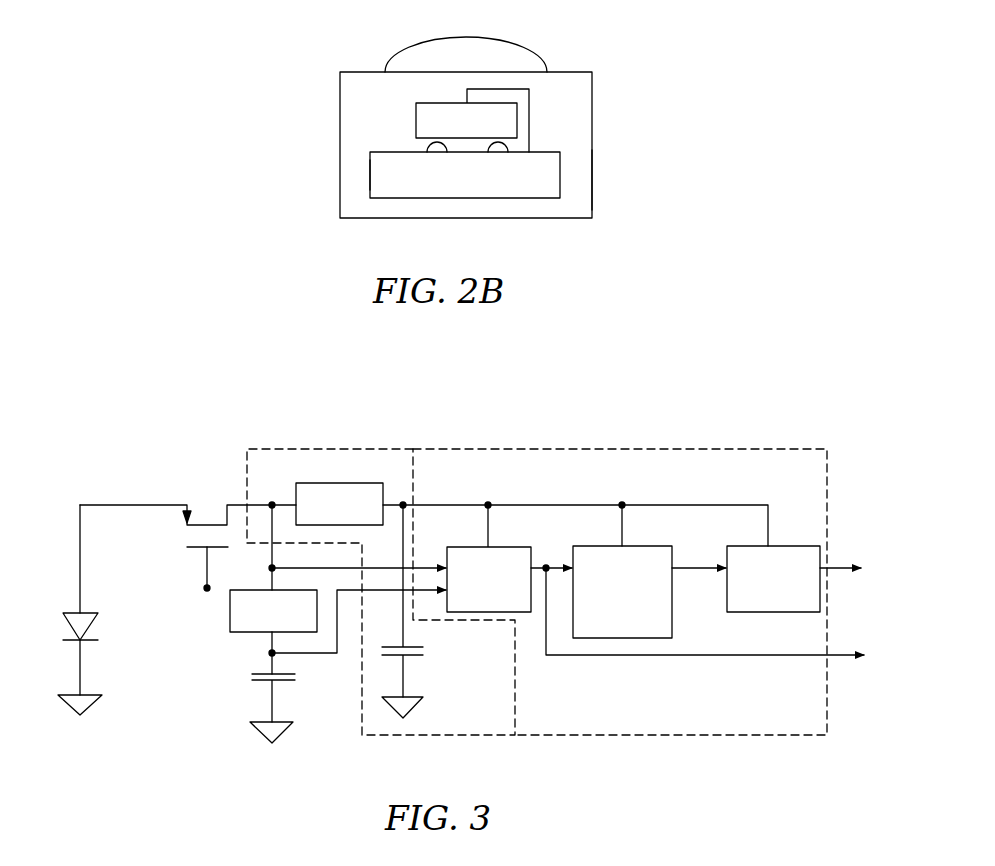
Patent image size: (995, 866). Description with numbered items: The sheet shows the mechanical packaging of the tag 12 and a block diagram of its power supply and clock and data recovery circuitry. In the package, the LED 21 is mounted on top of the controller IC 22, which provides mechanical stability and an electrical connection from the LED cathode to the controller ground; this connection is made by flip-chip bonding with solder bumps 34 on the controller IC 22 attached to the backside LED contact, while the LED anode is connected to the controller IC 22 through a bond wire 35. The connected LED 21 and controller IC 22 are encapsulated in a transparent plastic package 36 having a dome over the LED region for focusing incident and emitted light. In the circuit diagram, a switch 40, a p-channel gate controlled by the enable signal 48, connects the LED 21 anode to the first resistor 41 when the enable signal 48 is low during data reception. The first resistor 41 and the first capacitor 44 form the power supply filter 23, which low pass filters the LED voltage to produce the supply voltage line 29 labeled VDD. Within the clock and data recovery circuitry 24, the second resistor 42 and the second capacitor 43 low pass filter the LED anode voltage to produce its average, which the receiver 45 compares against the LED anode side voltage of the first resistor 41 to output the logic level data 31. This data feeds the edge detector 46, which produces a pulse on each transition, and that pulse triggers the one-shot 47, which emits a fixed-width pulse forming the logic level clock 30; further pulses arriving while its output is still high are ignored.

In FIG. 2B, the tag 12 is at (622, 36).
In FIG. 2B, the LED 21 is at (416, 118).
In FIG. 3, the LED 21 is at (67, 612).
In FIG. 2B, the controller integrated circuit 22 is at (470, 198).
In FIG. 2B, the solder bumps 34 is at (370, 178).
In FIG. 2B, the bond wire 35 is at (530, 98).
In FIG. 2B, the transparent plastic package 36 is at (592, 177).
In FIG. 3, the power supply filter 23 is at (305, 449).
In FIG. 3, the clock and data recovery circuitry 24 is at (563, 448).
In FIG. 3, the supply voltage line 29 is at (687, 504).
In FIG. 3, the logic level clock 30 is at (842, 570).
In FIG. 3, the logic level data 31 is at (682, 657).
In FIG. 3, the switch 40 is at (217, 523).
In FIG. 3, the resistor R1 41 is at (320, 483).
In FIG. 3, the resistor R2 42 is at (230, 610).
In FIG. 3, the capacitor C2 43 is at (258, 680).
In FIG. 3, the capacitor C1 44 is at (413, 656).
In FIG. 3, the receiver 45 is at (502, 547).
In FIG. 3, the edge detector 46 is at (642, 546).
In FIG. 3, the one-shot 47 is at (783, 546).
In FIG. 3, the enable signal 48 is at (205, 563).